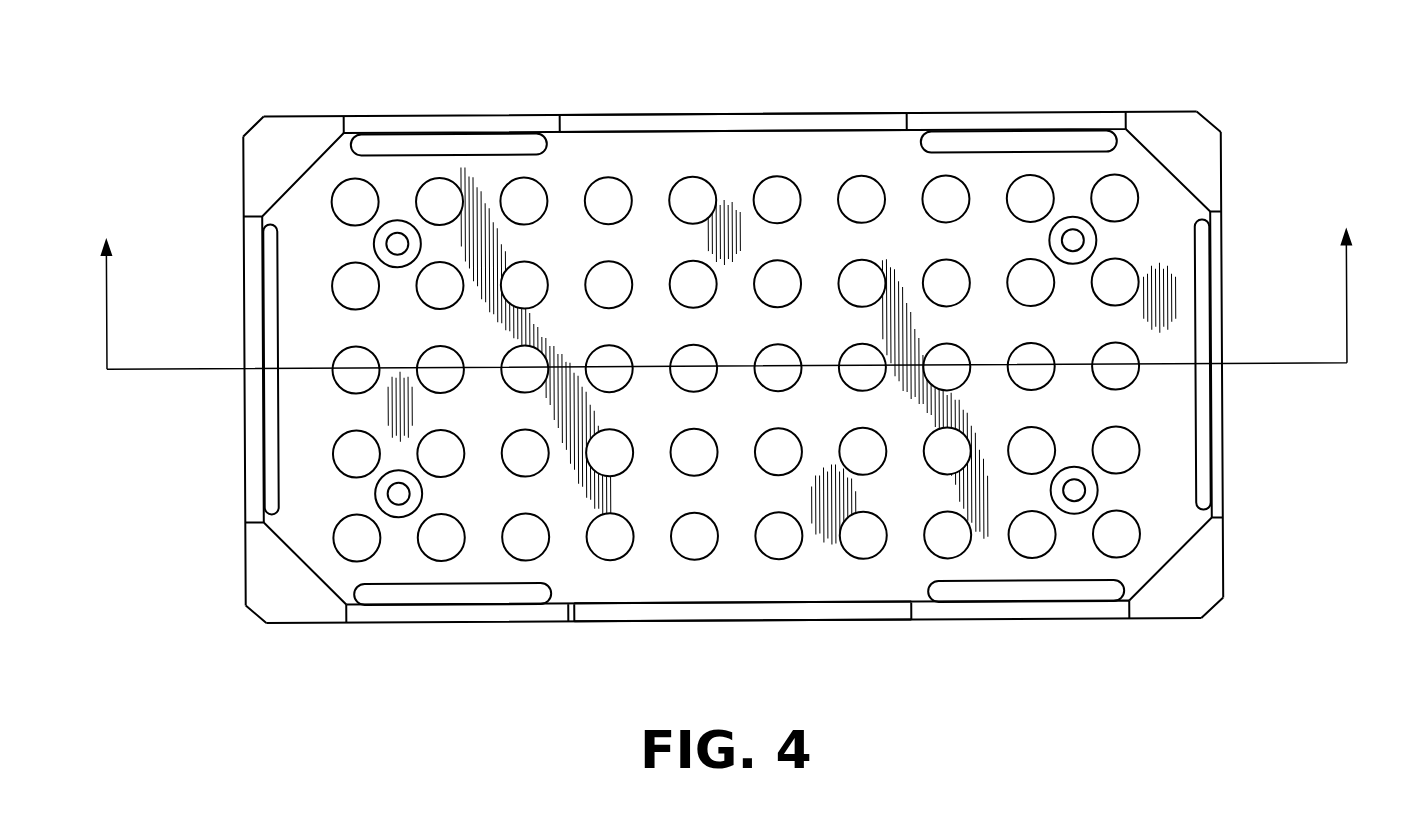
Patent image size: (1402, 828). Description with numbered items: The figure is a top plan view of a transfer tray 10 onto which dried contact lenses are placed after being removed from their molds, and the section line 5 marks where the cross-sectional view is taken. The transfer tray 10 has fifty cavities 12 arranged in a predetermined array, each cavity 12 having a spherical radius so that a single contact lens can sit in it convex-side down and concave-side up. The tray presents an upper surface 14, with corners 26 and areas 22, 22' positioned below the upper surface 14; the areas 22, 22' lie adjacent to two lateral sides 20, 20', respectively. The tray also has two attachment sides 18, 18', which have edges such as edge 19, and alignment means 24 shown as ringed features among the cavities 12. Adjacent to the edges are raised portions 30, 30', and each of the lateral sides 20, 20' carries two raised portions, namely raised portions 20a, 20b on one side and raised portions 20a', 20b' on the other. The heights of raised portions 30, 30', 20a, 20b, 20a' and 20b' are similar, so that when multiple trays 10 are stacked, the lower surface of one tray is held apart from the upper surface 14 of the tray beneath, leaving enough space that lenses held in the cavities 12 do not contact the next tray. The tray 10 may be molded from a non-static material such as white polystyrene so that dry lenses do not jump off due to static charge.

The transfer tray 10 is at (663, 113).
The cavity 12 is at (777, 198).
The upper surface 14 is at (562, 490).
The attachment side 18 is at (255, 175).
The attachment side 18' is at (1210, 170).
The edge 19 is at (255, 412).
The lateral side 20 is at (733, 90).
The lateral side 20' is at (743, 622).
The raised portion 20a is at (448, 113).
The raised portion 20a' is at (452, 624).
The raised portion 20b is at (1018, 104).
The raised portion 20b' is at (1026, 626).
The area 22 is at (732, 94).
The area 22' is at (742, 643).
The alignment means 24 is at (398, 242).
The corner 26 is at (275, 128).
The raised portion 30 is at (227, 369).
The raised portion 30' is at (1247, 362).
The section line 5- 5 is at (730, 302).